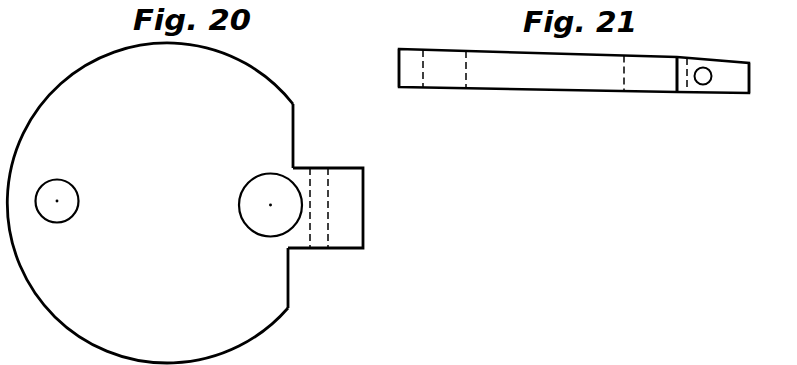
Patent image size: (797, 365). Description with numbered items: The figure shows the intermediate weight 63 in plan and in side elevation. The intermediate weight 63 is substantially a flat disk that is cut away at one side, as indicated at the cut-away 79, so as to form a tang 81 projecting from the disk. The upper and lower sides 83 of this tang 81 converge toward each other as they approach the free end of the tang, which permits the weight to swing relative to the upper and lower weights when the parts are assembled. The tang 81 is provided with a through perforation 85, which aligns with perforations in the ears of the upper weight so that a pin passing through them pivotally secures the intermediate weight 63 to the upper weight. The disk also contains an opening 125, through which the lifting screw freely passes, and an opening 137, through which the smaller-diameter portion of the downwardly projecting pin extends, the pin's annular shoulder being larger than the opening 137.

In FIG. 20, the intermediate weight 63 is at (73, 75).
In FIG. 21, the intermediate weight 63 is at (513, 50).
In FIG. 20, the cut-away portion 79 is at (302, 167).
In FIG. 20, the tang 81 is at (350, 186).
In FIG. 21, the tang 81 is at (749, 77).
In FIG. 21, the upper and lower sides of the tang 83 is at (727, 52).
In FIG. 20, the through perforation 85 is at (328, 230).
In FIG. 21, the through perforation 85 is at (700, 68).
In FIG. 20, the opening 125 is at (239, 197).
In FIG. 20, the opening 137 is at (72, 186).
In FIG. 21, the opening 137 is at (422, 68).